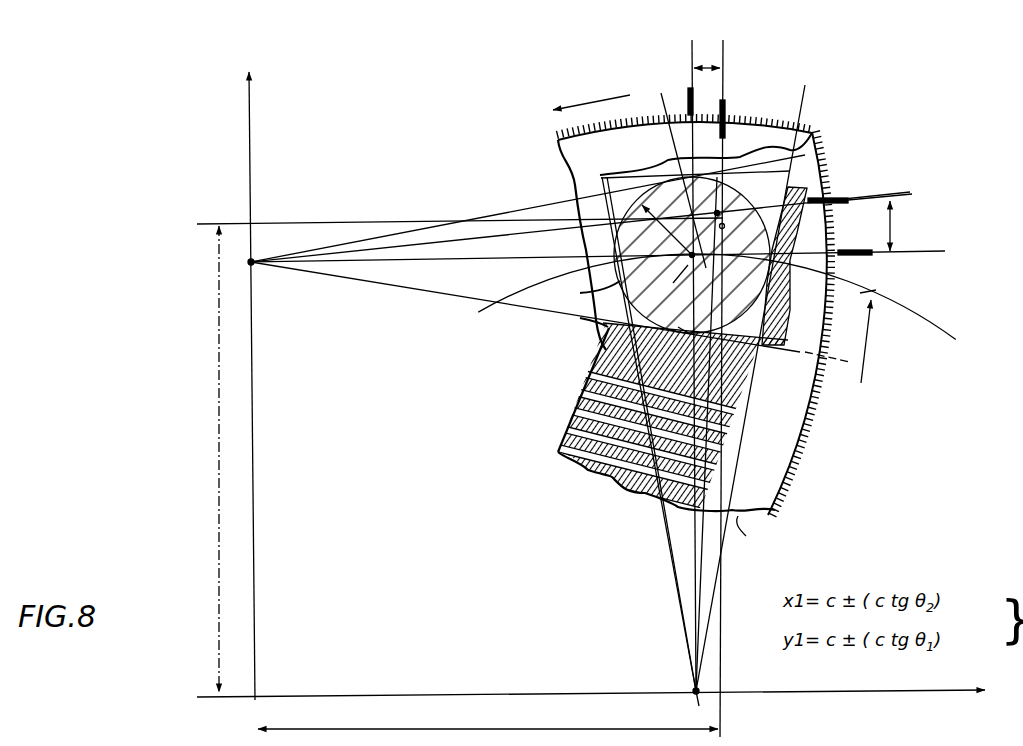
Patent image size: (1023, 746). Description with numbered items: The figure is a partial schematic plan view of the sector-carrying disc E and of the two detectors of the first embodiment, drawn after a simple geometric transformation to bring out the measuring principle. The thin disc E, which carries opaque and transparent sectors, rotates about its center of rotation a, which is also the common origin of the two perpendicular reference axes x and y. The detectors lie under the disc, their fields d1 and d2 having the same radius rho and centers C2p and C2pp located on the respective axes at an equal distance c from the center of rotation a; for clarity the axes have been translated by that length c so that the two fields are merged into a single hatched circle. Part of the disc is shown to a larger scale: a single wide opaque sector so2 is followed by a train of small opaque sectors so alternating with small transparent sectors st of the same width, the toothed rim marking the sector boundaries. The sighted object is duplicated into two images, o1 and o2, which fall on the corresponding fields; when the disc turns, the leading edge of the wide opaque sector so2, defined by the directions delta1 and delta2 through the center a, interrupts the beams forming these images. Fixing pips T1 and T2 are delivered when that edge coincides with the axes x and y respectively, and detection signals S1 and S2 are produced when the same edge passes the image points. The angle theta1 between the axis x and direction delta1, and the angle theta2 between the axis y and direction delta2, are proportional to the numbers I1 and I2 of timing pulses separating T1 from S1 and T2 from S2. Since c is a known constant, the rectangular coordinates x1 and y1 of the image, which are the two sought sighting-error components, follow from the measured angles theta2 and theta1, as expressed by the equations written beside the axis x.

The reference axis y,y' y is at (260, 383).
The reference axis x,x' x is at (602, 691).
The center of rotation of the disc a is at (460, 462).
The rectangular coordinate y1 is at (200, 459).
The rectangular coordinate x1 is at (488, 717).
The distance C c is at (598, 470).
The detector field d' d1 is at (717, 297).
The detector field d'' d2 is at (580, 316).
The disc E' E is at (666, 500).
The wide opaque sector so2 is at (700, 412).
The small transparent sectors st is at (700, 433).
The small opaque sectors so is at (700, 453).
The radius of the detector fields rho is at (692, 255).
The center C'2 of detector field d' C2p is at (669, 280).
The center C''2 of detector field d'' C2pp is at (670, 318).
The image O' o1 is at (725, 205).
The image point O''2 o2 is at (737, 236).
The number of timing pulses I2 is at (700, 365).
The detection signal S2 is at (736, 388).
The fixing pip T2 is at (615, 93).
The angle Θ2 theta2 is at (707, 59).
The axis aδ2 delta2 is at (757, 375).
The detection signal S1 is at (860, 183).
The number of timing pulses I1 is at (852, 236).
The angle Θ1 theta1 is at (904, 226).
The fixing pip T1 is at (865, 277).
The axis aδ1 delta1 is at (852, 341).